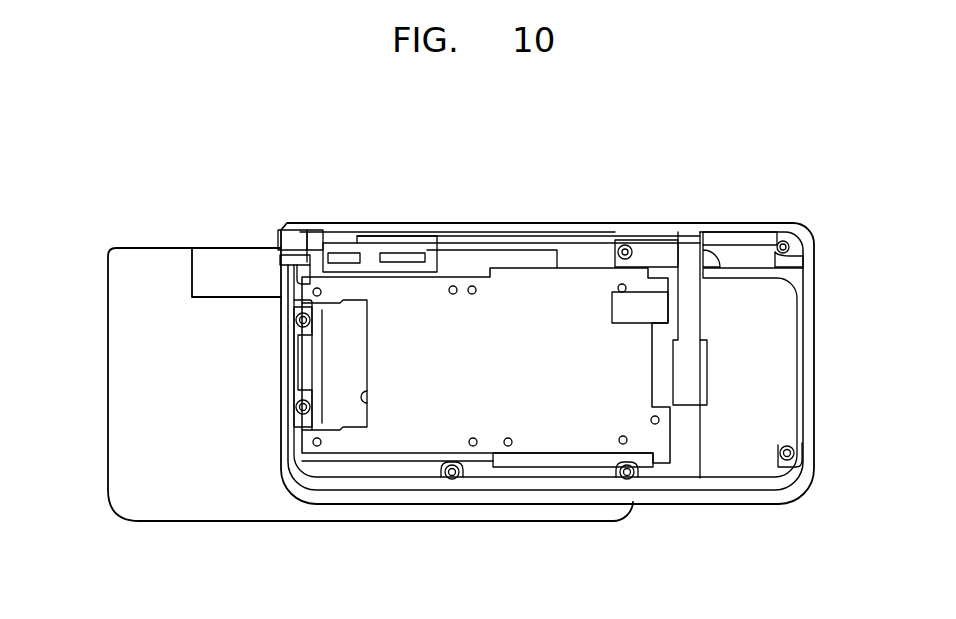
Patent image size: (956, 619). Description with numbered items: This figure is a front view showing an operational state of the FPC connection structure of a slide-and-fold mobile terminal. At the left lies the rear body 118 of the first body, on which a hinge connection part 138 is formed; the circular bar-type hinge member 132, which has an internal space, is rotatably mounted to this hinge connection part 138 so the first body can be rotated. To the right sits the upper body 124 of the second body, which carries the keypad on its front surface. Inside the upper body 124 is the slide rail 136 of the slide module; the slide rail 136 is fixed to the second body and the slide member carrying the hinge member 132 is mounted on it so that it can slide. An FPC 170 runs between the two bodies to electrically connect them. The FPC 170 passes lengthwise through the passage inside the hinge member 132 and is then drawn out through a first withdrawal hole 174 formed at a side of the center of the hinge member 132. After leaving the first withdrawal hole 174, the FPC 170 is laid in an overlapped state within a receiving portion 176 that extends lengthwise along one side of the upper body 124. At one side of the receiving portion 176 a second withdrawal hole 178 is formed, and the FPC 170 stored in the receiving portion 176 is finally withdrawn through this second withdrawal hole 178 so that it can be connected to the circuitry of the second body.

The rear body 118 is at (125, 356).
The hinge connection part 138 is at (155, 260).
The upper body 124 is at (783, 374).
The slide rail 136 is at (405, 440).
The hinge member 132 is at (463, 257).
The first withdrawal hole 174 is at (410, 250).
The receiving portion 176 is at (323, 232).
The second withdrawal hole 178 is at (717, 247).
The FPC 170 is at (370, 257).